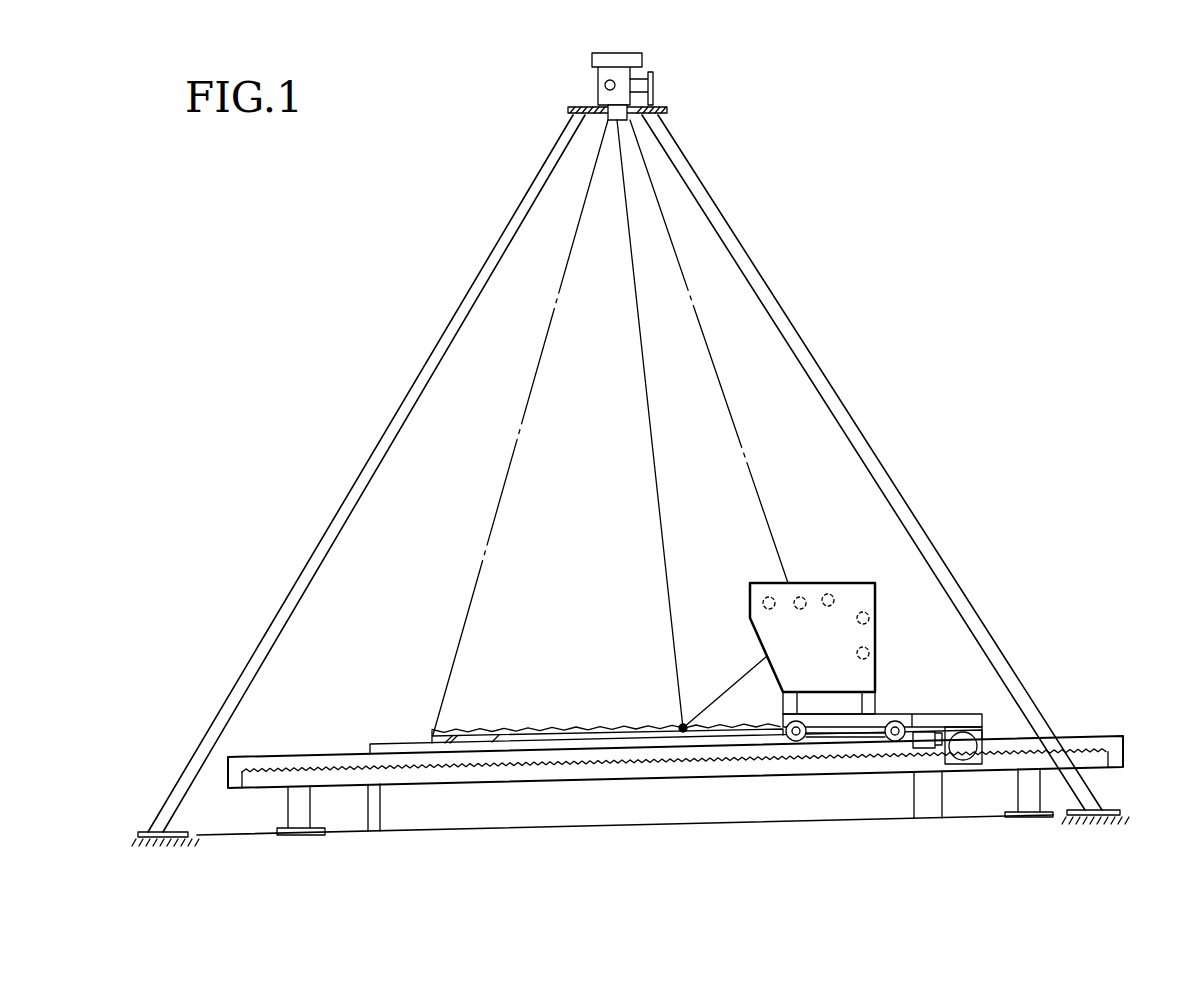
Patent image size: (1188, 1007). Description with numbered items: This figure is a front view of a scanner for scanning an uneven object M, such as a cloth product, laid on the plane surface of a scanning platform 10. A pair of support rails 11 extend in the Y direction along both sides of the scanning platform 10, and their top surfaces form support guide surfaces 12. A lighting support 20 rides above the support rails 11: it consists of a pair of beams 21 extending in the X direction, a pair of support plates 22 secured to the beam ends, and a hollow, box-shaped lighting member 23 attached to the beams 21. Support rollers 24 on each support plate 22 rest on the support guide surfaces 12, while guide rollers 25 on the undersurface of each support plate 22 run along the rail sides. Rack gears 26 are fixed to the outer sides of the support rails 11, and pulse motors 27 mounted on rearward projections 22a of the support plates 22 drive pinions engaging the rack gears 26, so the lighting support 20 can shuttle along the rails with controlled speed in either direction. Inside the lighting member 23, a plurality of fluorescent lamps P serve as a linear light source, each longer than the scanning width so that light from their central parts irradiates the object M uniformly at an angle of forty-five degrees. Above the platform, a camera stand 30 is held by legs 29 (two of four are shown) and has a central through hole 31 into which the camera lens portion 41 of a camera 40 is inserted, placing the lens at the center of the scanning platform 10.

The scanning platform 10 is at (406, 742).
The support rails 11 is at (1125, 745).
The support guide surfaces 12 is at (1090, 735).
The lighting support 20 is at (811, 631).
The beams 21 is at (872, 704).
The support plates 22 is at (913, 770).
The rearward projections 22a is at (980, 762).
The lighting member 23 is at (878, 598).
The support rollers 24 is at (806, 742).
The guide rollers 25 is at (922, 749).
The rack gears 26 is at (557, 790).
The pulse motors 27 is at (962, 760).
The legs 29 is at (447, 330).
The camera stand 30 is at (668, 109).
The through hole 31 is at (640, 128).
The camera 40 is at (640, 63).
The camera lens portion 41 is at (604, 117).
The object M is at (537, 733).
The fluorescent lamps P is at (830, 598).